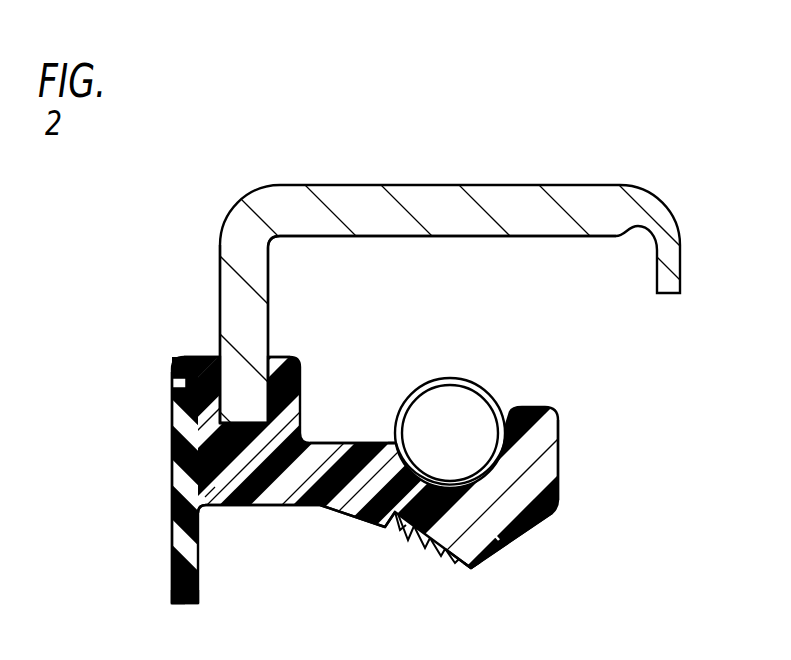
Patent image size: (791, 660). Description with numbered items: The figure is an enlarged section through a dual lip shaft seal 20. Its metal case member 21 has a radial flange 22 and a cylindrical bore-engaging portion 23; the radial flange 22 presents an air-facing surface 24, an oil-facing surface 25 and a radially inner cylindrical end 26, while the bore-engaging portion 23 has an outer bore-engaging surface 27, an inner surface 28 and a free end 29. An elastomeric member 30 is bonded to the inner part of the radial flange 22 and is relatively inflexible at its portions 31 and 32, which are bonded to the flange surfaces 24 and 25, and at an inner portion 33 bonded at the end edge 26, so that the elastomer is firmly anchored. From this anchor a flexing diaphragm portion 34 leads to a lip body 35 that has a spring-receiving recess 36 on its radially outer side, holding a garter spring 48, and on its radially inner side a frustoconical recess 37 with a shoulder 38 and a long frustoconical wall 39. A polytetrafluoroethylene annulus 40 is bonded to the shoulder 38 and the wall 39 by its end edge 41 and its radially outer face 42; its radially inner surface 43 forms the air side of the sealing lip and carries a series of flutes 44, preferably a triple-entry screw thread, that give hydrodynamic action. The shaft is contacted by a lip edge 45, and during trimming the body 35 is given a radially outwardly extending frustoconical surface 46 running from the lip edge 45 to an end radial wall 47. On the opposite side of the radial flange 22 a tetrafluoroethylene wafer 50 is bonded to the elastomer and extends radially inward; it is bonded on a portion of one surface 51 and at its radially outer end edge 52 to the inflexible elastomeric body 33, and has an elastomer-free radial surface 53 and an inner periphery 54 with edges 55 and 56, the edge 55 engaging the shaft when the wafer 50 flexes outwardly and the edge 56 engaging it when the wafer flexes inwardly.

The dual lip shaft seal 20 is at (228, 178).
The metal case member 21 is at (276, 176).
The radial flange 22 is at (257, 274).
The cylindrical bore-engaging portion 23 is at (377, 192).
The air-facing surface 24 is at (221, 262).
The oil-facing surface 25 is at (268, 296).
The radially inner cylindrical end 26 is at (254, 418).
The outer bore-engaging surface 27 is at (518, 185).
The inner surface 28 is at (417, 236).
The free end 29 is at (678, 268).
The elastomeric member 30 is at (582, 490).
The relatively inflexible portion 31 is at (194, 357).
The relatively inflexible portion 32 is at (273, 357).
The inner portion 33 is at (278, 490).
The flexing diaphragm portion 34 is at (348, 455).
The lip body 35 is at (388, 440).
The spring-receiving recess 36 is at (405, 463).
The frustoconical recess 37 is at (470, 570).
The shoulder 38 is at (398, 530).
The long frustoconical wall 39 is at (409, 540).
The polytetrafluoroethylene annulus 40 is at (442, 556).
The end edge 41 is at (380, 525).
The radially outer face 42 is at (499, 539).
The radially inner surface 43 is at (458, 562).
The flutes 44 is at (426, 548).
The lip edge 45 is at (477, 566).
The radially outwardly extending frustoconical surface 46 is at (553, 512).
The end radial wall 47 is at (558, 466).
The garter spring 48 is at (478, 387).
The tetrafluoroethylene wafer 50 is at (205, 515).
The surface 51 is at (200, 492).
The radially outer end edge 52 is at (180, 388).
The elastomer-free radial surface 53 is at (172, 538).
The inner periphery 54 is at (187, 607).
The edge 55 is at (197, 603).
The edge 56 is at (172, 600).